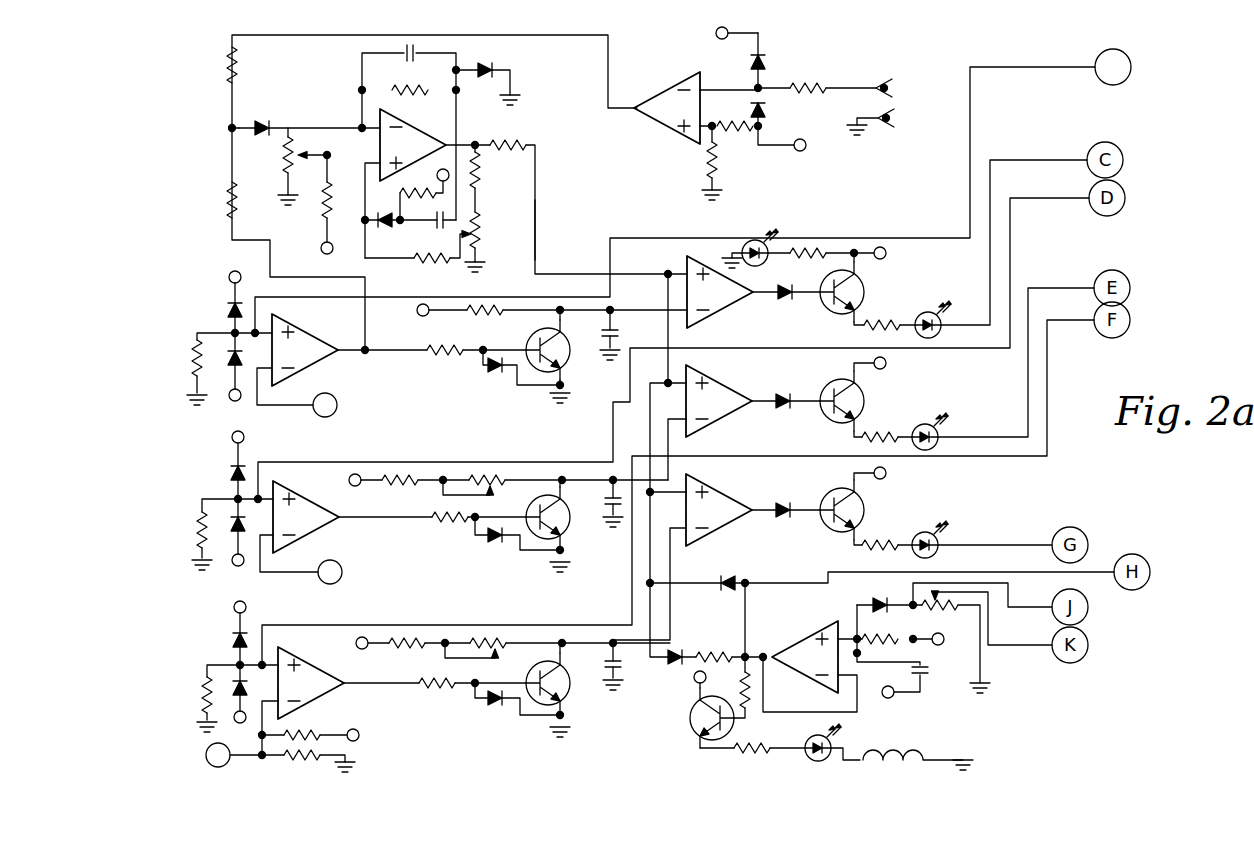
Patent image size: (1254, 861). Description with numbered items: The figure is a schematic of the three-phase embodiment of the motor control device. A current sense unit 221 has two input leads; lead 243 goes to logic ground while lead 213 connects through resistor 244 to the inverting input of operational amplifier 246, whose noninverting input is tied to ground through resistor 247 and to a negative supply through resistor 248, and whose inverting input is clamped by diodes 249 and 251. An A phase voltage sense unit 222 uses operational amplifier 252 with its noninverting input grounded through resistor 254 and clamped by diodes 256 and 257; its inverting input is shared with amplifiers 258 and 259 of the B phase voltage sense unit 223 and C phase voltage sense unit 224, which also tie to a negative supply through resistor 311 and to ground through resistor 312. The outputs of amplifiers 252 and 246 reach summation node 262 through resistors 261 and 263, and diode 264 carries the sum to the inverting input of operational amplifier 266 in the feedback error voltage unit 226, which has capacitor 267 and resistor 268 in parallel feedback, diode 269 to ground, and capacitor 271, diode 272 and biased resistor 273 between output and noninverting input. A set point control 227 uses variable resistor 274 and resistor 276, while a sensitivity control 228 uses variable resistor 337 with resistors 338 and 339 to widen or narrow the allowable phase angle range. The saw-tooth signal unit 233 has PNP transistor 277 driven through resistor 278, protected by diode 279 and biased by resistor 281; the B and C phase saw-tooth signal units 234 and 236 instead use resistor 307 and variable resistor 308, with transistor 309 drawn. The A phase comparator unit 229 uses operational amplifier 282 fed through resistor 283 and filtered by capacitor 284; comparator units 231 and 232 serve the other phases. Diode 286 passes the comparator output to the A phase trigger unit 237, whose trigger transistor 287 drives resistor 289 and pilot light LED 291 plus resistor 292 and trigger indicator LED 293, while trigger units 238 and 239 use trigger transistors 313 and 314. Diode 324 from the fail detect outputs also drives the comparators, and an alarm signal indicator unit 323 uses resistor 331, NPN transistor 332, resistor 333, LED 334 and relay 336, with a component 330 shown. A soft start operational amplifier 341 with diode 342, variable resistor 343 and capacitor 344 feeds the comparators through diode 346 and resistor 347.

The input lead 213 is at (890, 84).
The current sense unit 221 is at (780, 107).
The A phase voltage sense unit 222 is at (628, 233).
The B phase voltage sense unit 223 is at (243, 500).
The C phase voltage sense unit 224 is at (257, 686).
The feedback error voltage unit 226 is at (523, 160).
The set point control 227 is at (409, 192).
The sensitivity control 228 is at (542, 233).
The A phase comparator unit 229 is at (734, 295).
The B phase comparator unit 231 is at (724, 412).
The C phase comparator unit 232 is at (724, 522).
The saw-tooth signal unit 233 is at (512, 359).
The B phase saw-tooth signal unit 234 is at (493, 596).
The C phase saw-tooth signal unit 236 is at (524, 730).
The A phase trigger unit 237 is at (785, 438).
The B phase trigger unit 238 is at (795, 418).
The C phase trigger unit 239 is at (767, 553).
The input lead 243 is at (896, 118).
The resistor 244 is at (808, 82).
The operational amplifier 246 is at (675, 121).
The resistor 247 is at (706, 161).
The resistor 248 is at (748, 133).
The diode 249 is at (751, 63).
The diode 251 is at (766, 109).
The operational amplifier 252 is at (330, 360).
The resistor 254 is at (190, 356).
The diode 256 is at (228, 309).
The diode 257 is at (228, 364).
The operational amplifier 258 is at (325, 526).
The operational amplifier 259 is at (328, 692).
The resistor 261 is at (226, 200).
The summation node 262 is at (228, 129).
The resistor 263 is at (226, 65).
The diode 264 is at (262, 120).
The operational amplifier 266 is at (413, 130).
The capacitor 267 is at (404, 60).
The resistor 268 is at (418, 86).
The diode 269 is at (490, 63).
The capacitor 271 is at (436, 226).
The diode 272 is at (383, 228).
The resistor 273 is at (418, 198).
The variable resistor 274 is at (282, 156).
The resistor 276 is at (333, 196).
The PNP transistor 277 is at (564, 361).
The resistor 278 is at (440, 356).
The diode 279 is at (490, 372).
The resistor 281 is at (488, 313).
The operational amplifier 282 is at (758, 304).
The resistor 283 is at (514, 140).
The capacitor 284 is at (616, 333).
The diode 286 is at (789, 300).
The trigger transistor 287 is at (860, 289).
The resistor 289 is at (808, 246).
The pilot light LED 291 is at (757, 240).
The resistor 292 is at (888, 331).
The trigger indicator LED 293 is at (937, 331).
The resistor 307 is at (400, 485).
The variable resistor 308 is at (495, 476).
The transistor 309 is at (570, 532).
The resistor 311 is at (300, 732).
The resistor 312 is at (300, 760).
The trigger transistor 313 is at (857, 405).
The trigger transistor 314 is at (857, 515).
The alarm signal indicator unit 323 is at (850, 684).
The diode 324 is at (735, 577).
The potentiometer 330 is at (938, 612).
The resistor 331 is at (755, 689).
The NPN transistor 332 is at (689, 713).
The resistor 333 is at (752, 754).
The LED 334 is at (812, 757).
The relay 336 is at (890, 764).
The variable resistor 337 is at (481, 230).
The resistor 338 is at (414, 259).
The resistor 339 is at (481, 170).
The operational amplifier 341 is at (802, 641).
The diode 342 is at (878, 600).
The variable resistor 343 is at (888, 645).
The capacitor 344 is at (928, 681).
The diode 346 is at (688, 650).
The resistor 347 is at (718, 652).